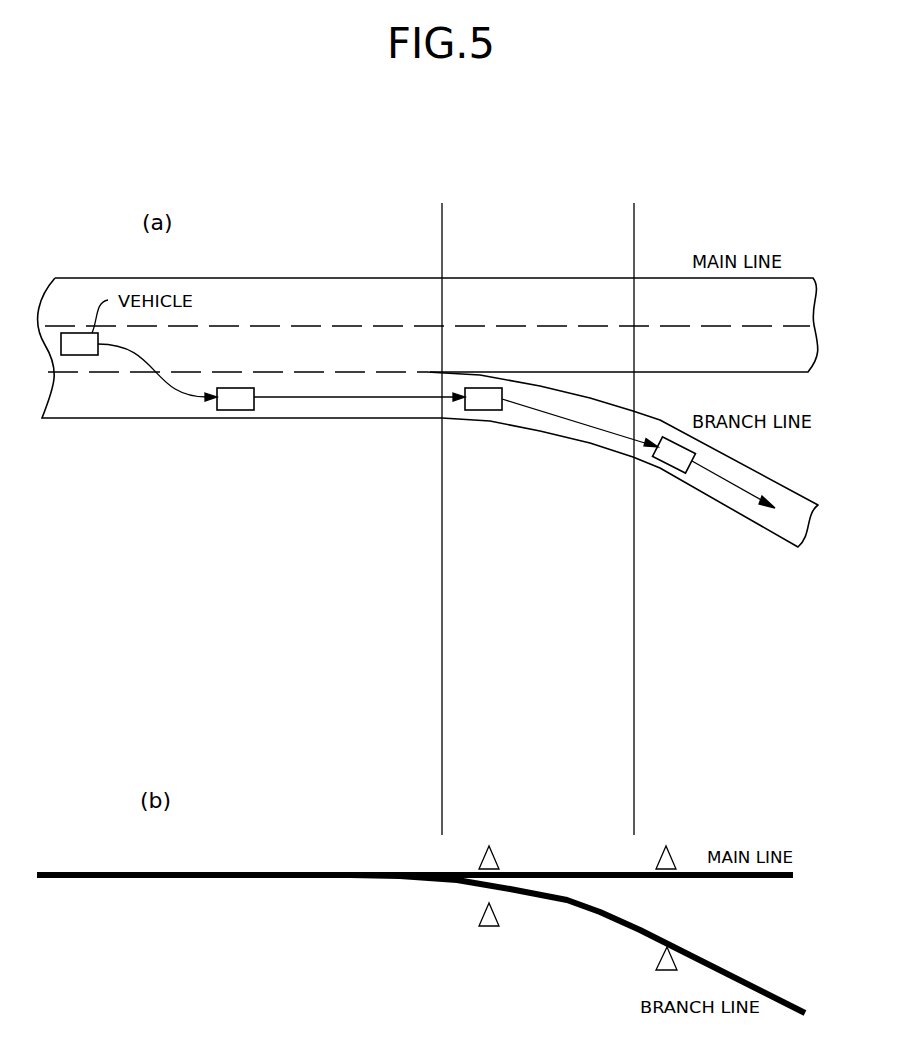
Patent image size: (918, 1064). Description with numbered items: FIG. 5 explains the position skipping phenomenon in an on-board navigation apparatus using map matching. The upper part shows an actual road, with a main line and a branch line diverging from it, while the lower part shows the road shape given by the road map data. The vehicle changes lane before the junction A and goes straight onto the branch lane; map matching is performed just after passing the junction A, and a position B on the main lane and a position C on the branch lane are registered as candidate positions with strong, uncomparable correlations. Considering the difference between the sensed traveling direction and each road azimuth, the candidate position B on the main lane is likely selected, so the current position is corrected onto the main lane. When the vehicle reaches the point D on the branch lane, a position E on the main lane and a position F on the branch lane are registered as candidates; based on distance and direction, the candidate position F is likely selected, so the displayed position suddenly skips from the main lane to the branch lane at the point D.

The junction A is at (461, 503).
The candidate position on the main lane B is at (482, 857).
The candidate position on the branch lane C is at (481, 915).
The point on the branch lane D is at (637, 503).
The candidate position on the main lane E is at (659, 857).
The candidate position on the branch lane F is at (660, 958).